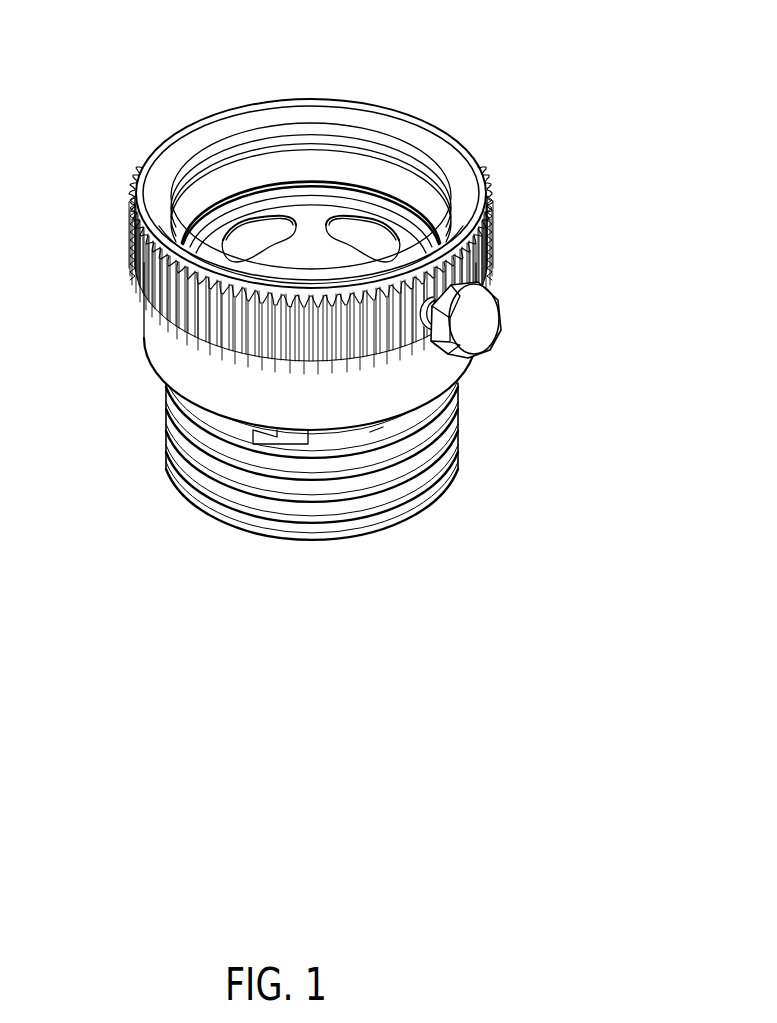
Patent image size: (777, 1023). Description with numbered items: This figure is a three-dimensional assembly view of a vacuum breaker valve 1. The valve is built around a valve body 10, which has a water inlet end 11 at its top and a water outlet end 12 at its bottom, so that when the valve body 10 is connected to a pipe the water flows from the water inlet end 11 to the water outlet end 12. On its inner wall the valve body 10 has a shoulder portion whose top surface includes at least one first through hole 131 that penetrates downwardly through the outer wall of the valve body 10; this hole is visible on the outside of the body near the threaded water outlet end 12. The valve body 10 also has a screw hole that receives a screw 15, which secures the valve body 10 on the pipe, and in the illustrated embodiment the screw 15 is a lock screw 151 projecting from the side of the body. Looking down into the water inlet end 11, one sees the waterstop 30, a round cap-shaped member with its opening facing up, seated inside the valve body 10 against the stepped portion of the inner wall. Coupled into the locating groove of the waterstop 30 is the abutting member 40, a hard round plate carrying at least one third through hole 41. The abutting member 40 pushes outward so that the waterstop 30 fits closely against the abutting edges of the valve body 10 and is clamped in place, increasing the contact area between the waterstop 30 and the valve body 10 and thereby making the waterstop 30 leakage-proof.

The vacuum breaker valve 1 is at (498, 162).
The valve body 10 is at (478, 384).
The water inlet end 11 is at (346, 152).
The water outlet end 12 is at (333, 540).
The first through hole 131 is at (277, 434).
The screw 15 is at (563, 320).
The lock screw 151 is at (483, 321).
The waterstop 30 is at (271, 181).
The abutting member 40 is at (231, 219).
The third through hole 41 is at (230, 228).